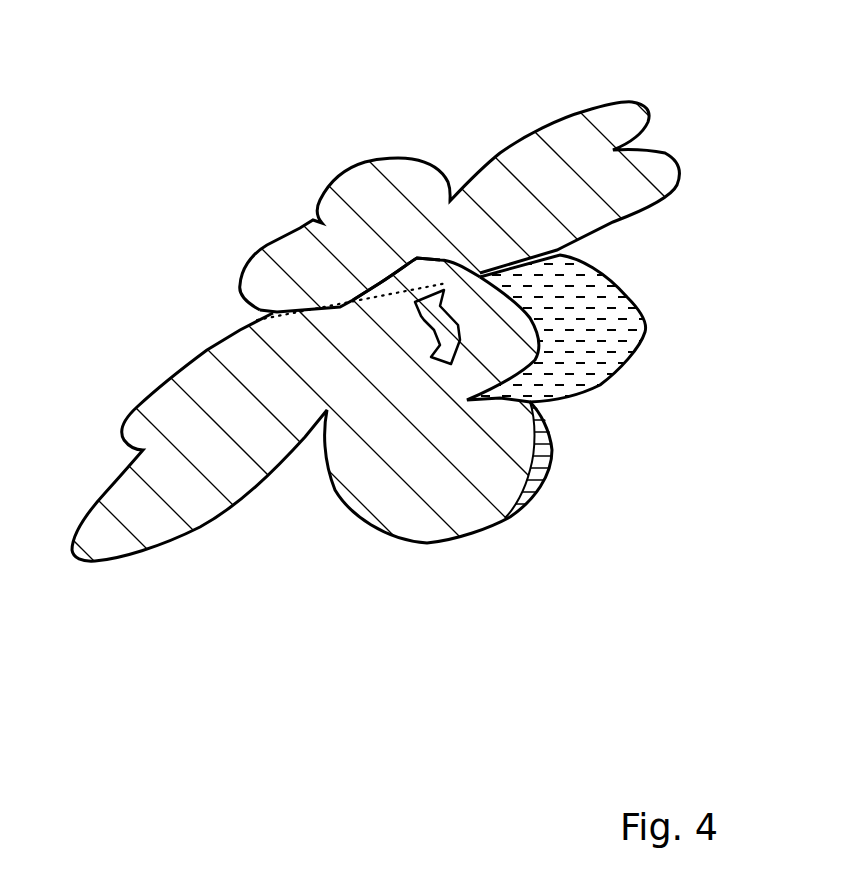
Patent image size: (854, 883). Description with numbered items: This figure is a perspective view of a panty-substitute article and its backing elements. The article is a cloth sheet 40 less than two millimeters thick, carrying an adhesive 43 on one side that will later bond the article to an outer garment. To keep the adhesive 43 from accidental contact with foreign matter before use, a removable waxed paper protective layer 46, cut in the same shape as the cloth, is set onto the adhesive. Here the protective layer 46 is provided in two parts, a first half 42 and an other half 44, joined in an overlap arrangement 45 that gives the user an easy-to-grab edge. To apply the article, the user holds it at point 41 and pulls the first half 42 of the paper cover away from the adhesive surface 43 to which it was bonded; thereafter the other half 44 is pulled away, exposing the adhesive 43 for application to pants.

The cloth sheet 40 is at (427, 441).
The point 41 is at (352, 175).
The first half of the paper cover 42 is at (383, 500).
The adhesive 43 is at (550, 377).
The other half of the paper cover 44 is at (523, 262).
The overlap arrangement 45 is at (410, 263).
The protective layer 46 is at (265, 317).